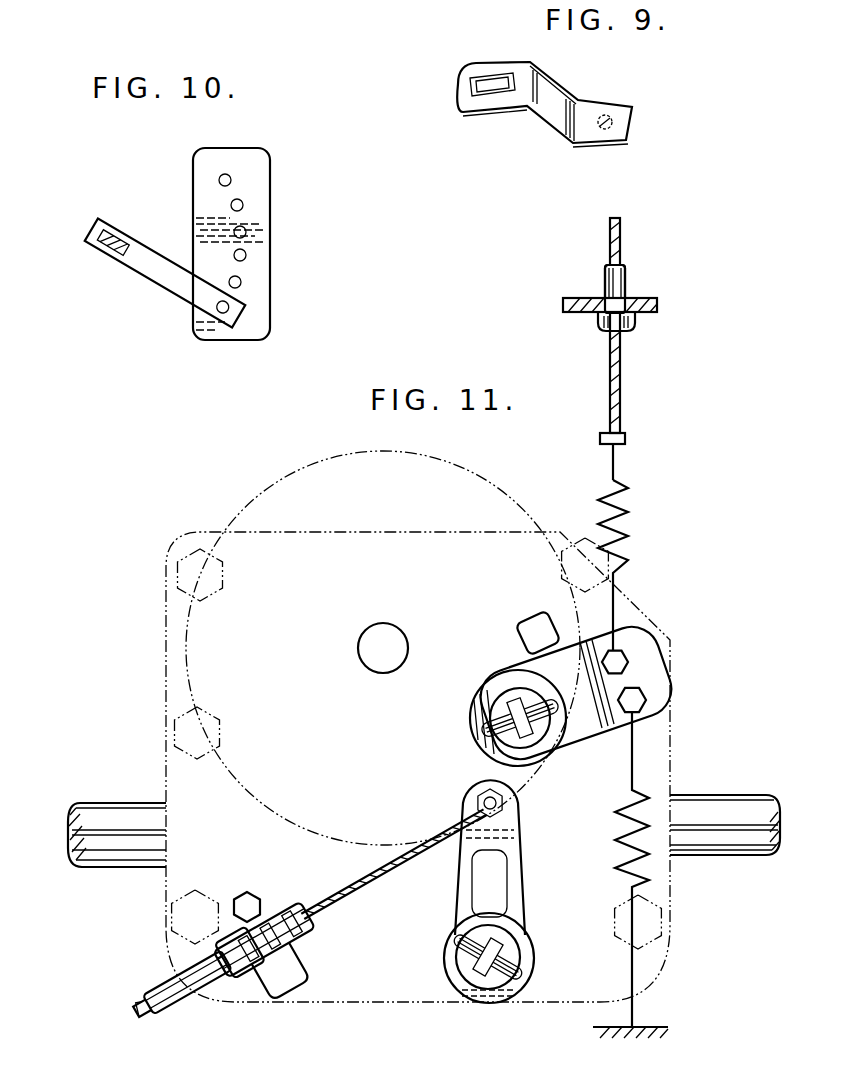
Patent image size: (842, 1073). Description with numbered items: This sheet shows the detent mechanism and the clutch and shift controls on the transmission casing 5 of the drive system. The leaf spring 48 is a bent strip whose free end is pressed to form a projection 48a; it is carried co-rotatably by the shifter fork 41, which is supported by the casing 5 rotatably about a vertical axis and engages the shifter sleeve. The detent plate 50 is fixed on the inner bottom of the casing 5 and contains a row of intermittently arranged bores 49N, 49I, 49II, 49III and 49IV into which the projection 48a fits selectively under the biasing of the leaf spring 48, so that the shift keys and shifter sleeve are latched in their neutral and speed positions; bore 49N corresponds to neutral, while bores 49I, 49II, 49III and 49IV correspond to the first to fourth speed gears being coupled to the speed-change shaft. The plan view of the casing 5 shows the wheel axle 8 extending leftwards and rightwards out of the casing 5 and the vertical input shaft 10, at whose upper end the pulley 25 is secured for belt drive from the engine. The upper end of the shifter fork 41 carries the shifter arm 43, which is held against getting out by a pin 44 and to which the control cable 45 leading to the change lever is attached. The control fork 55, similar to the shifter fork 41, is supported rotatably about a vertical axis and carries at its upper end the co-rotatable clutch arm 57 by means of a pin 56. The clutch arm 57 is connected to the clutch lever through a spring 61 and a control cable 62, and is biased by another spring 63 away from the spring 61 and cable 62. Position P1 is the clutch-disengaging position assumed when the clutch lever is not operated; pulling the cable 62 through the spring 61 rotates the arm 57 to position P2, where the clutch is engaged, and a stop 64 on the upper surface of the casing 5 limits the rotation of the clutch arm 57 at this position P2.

In FIG. 9, the leaf spring 48 is at (548, 101).
In FIG. 10, the leaf spring 48 is at (165, 275).
In FIG. 9, the projection 48a is at (612, 128).
In FIG. 10, the detent plate 50 is at (232, 150).
In FIG. 10, the bore 49N is at (230, 177).
In FIG. 10, the bore 49I is at (242, 202).
In FIG. 10, the bore 49II is at (245, 230).
In FIG. 10, the bore 49III is at (245, 253).
In FIG. 10, the bore 49IV is at (241, 282).
In FIG. 10, the shifter fork 41 is at (118, 240).
In FIG. 11, the shifter fork 41 is at (485, 975).
In FIG. 11, the transmission casing 5 is at (370, 1003).
In FIG. 11, the wheel axle 8 is at (728, 820).
In FIG. 11, the input shaft 10 is at (372, 643).
In FIG. 11, the pulley 25 is at (240, 520).
In FIG. 11, the shifter arm 43 is at (515, 858).
In FIG. 11, the pin 44 is at (532, 958).
In FIG. 11, the control cable 45 is at (396, 852).
In FIG. 11, the control fork 55 is at (496, 682).
In FIG. 11, the pin 56 is at (492, 736).
In FIG. 11, the clutch arm 57 is at (583, 730).
In FIG. 11, the spring 61 is at (628, 515).
In FIG. 11, the control cable 62 is at (622, 388).
In FIG. 11, the spring 63 is at (648, 835).
In FIG. 11, the stop 64 is at (530, 625).
In FIG. 11, the clutch-disengaging position P1 is at (568, 710).
In FIG. 11, the clutch-engaging position P2 is at (560, 700).